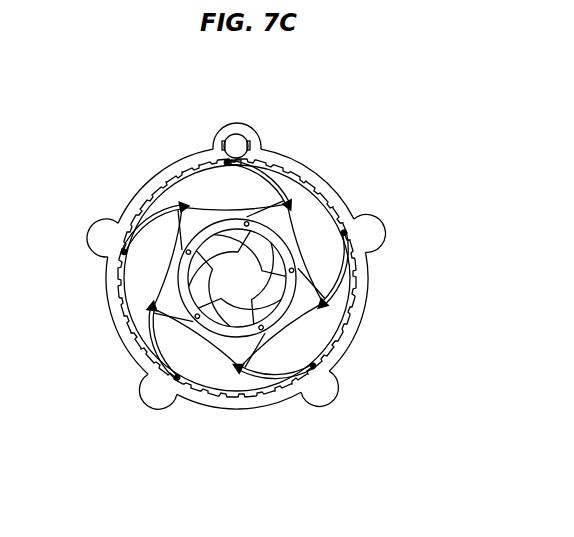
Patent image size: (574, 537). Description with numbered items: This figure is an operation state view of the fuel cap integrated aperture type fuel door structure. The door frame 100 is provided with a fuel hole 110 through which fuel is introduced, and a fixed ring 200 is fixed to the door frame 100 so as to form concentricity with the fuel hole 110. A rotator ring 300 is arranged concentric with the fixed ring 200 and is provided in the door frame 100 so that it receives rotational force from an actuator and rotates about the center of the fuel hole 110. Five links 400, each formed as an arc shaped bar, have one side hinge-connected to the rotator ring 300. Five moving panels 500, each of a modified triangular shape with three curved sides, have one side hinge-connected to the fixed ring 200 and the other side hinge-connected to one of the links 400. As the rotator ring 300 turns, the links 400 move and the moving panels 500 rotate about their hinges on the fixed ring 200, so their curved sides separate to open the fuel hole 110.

The door frame 100 is at (314, 164).
The fuel hole 110 is at (231, 278).
The fixed ring 200 is at (207, 213).
The rotator ring 300 is at (355, 277).
The link 400 is at (250, 380).
The moving panel 500 is at (228, 352).